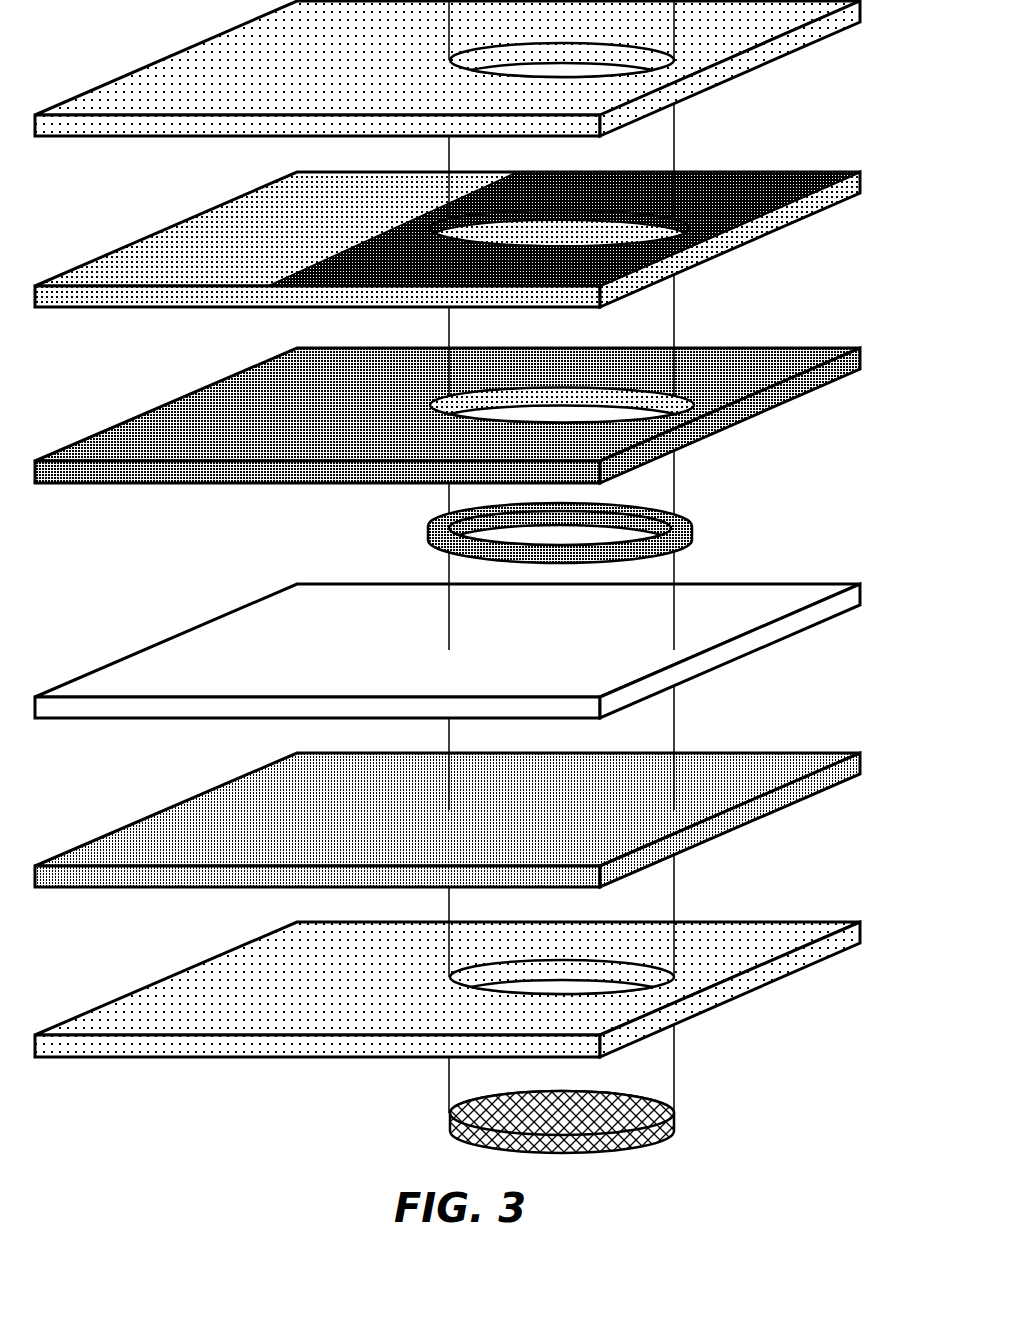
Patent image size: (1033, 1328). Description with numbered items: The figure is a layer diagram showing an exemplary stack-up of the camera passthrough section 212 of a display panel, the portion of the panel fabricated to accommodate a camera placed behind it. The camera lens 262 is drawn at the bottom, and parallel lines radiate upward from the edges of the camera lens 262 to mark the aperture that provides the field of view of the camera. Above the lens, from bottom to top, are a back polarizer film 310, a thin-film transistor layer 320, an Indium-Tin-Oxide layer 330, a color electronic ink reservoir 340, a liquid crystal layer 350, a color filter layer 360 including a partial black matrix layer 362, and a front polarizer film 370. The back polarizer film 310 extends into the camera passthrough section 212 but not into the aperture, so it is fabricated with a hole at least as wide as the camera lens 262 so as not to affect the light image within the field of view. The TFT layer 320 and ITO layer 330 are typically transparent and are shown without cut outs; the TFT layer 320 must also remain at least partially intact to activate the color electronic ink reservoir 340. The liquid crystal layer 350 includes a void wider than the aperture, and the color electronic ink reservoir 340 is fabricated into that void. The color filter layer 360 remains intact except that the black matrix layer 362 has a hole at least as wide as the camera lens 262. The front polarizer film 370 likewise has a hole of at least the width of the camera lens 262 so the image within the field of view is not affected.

The camera passthrough section 212 is at (447, 583).
The camera lens 262 is at (628, 1077).
The back polarizer film 310 is at (175, 976).
The thin-film transistor (TFT) layer 320 is at (175, 806).
The Indium-Tin-Oxide (ITO) layer 330 is at (175, 636).
The color electronic ink reservoir 340 is at (690, 523).
The liquid crystal layer 350 is at (175, 400).
The color filter layer 360 is at (447, 218).
The black matrix layer 362 is at (783, 171).
The front polarizer film 370 is at (175, 56).